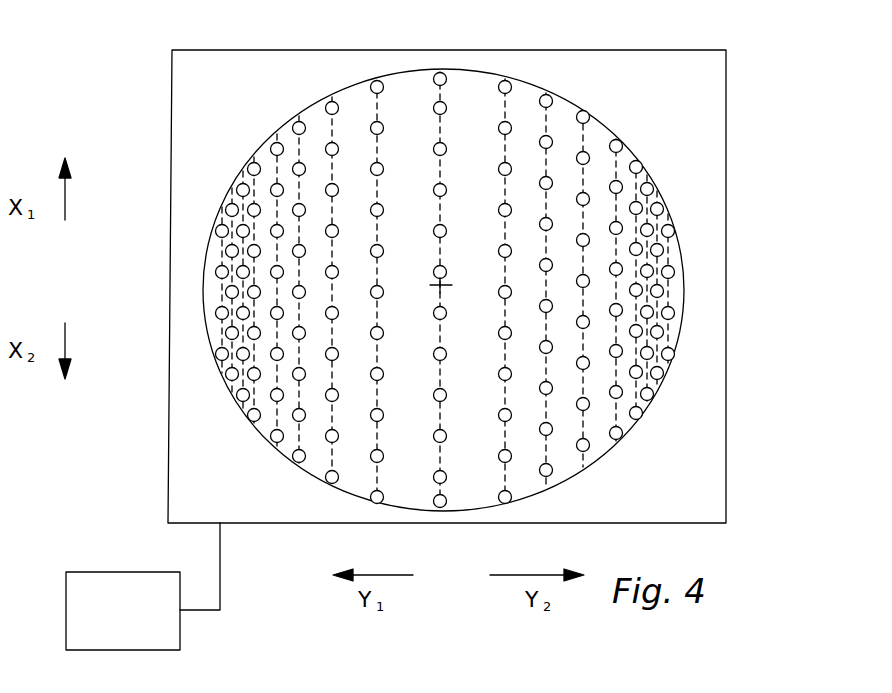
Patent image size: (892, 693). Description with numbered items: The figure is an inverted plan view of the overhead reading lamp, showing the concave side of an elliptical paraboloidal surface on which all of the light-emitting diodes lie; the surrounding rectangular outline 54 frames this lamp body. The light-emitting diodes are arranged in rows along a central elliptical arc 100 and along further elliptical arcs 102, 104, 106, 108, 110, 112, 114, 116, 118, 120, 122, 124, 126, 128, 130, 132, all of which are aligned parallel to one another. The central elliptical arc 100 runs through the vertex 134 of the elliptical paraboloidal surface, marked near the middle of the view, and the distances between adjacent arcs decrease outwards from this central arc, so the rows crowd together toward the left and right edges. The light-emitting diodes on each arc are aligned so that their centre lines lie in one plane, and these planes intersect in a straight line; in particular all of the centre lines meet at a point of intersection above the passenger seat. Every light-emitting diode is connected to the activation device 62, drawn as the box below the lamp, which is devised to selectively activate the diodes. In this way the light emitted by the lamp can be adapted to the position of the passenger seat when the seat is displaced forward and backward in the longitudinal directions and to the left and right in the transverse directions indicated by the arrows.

The stage 54 is at (710, 484).
The activation device 62 is at (143, 586).
The elliptical arc 100 is at (440, 496).
The elliptical arc 102 is at (217, 247).
The elliptical arc 104 is at (228, 224).
The elliptical arc 106 is at (237, 200).
The elliptical arc 108 is at (247, 180).
The elliptical arc 110 is at (272, 156).
The elliptical arc 112 is at (291, 135).
The elliptical arc 114 is at (335, 122).
The elliptical arc 116 is at (400, 98).
The elliptical arc 118 is at (513, 98).
The elliptical arc 120 is at (548, 118).
The elliptical arc 122 is at (585, 140).
The elliptical arc 124 is at (620, 150).
The elliptical arc 126 is at (645, 172).
The elliptical arc 128 is at (652, 197).
The elliptical arc 130 is at (657, 222).
The elliptical arc 132 is at (665, 282).
The vertex 134 is at (445, 285).